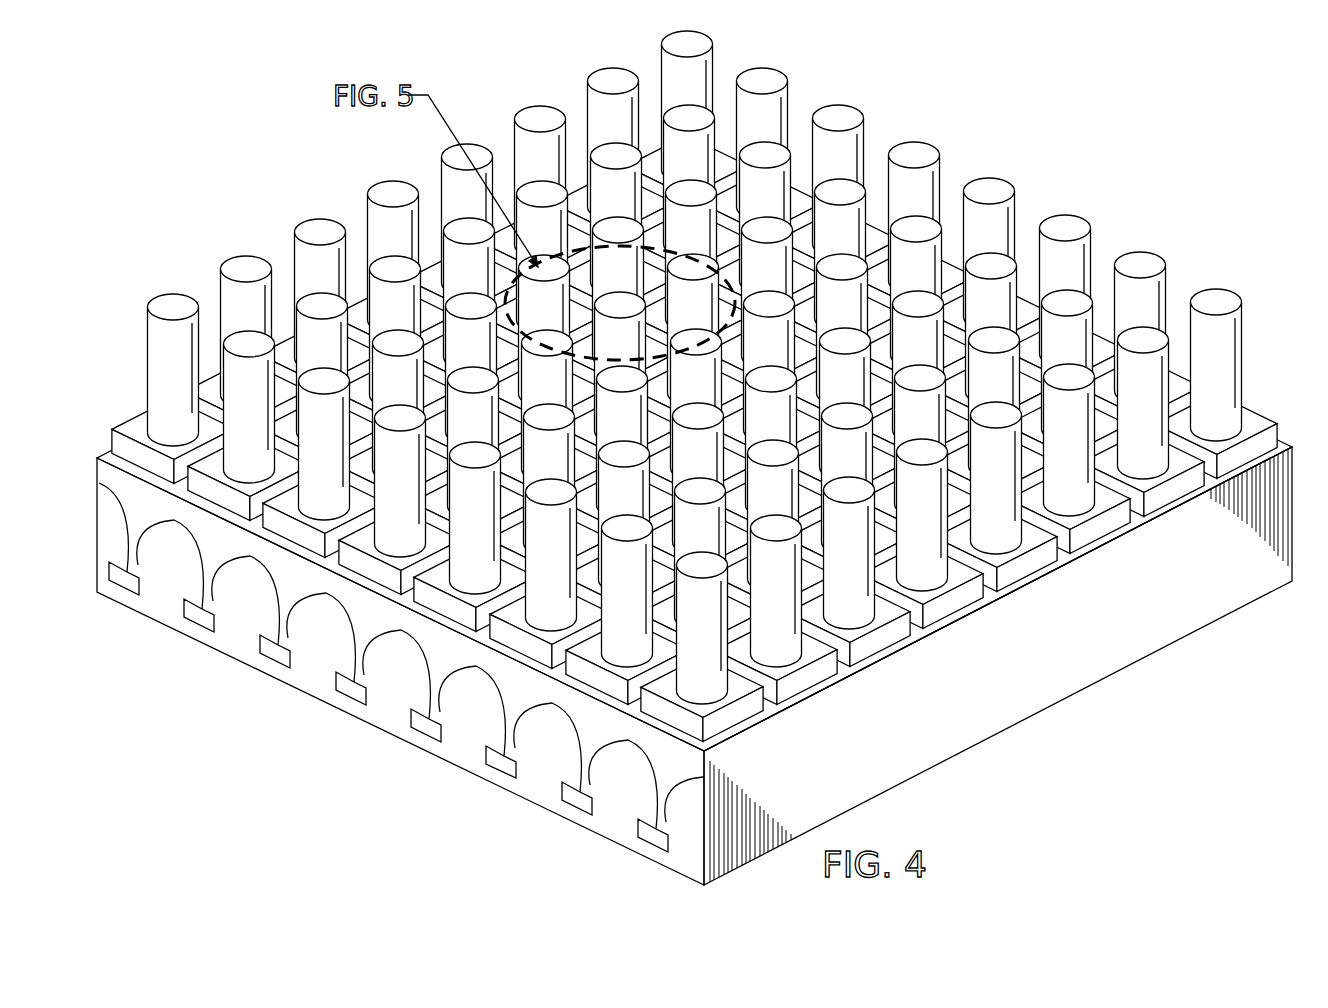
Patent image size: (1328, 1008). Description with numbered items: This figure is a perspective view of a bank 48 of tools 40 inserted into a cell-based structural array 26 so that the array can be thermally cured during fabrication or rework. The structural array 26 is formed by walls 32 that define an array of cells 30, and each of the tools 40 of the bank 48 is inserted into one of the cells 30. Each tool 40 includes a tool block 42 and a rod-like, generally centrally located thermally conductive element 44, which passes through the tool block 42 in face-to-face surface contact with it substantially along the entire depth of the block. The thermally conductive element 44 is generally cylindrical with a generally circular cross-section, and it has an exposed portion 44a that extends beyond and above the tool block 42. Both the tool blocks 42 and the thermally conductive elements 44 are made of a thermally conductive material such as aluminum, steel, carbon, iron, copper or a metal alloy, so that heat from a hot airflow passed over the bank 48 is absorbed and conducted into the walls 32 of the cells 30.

The cell-based structural array 26 is at (694, 521).
The cells 30 is at (655, 735).
The walls 32 is at (1128, 650).
The tools 40 is at (433, 626).
The tool block 42 is at (295, 535).
The thermally conductive element 44 is at (1243, 339).
The exposed portion 44a is at (138, 299).
The bank 48 is at (1193, 514).